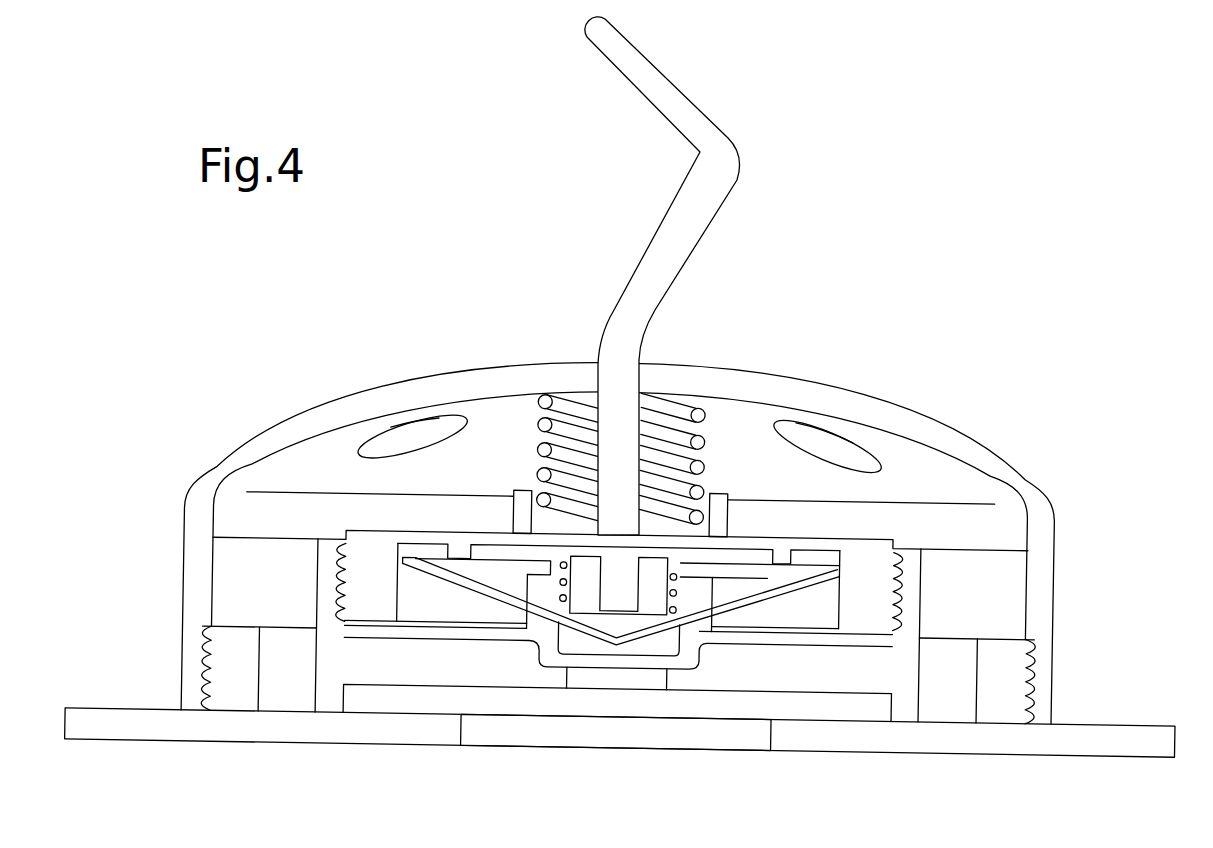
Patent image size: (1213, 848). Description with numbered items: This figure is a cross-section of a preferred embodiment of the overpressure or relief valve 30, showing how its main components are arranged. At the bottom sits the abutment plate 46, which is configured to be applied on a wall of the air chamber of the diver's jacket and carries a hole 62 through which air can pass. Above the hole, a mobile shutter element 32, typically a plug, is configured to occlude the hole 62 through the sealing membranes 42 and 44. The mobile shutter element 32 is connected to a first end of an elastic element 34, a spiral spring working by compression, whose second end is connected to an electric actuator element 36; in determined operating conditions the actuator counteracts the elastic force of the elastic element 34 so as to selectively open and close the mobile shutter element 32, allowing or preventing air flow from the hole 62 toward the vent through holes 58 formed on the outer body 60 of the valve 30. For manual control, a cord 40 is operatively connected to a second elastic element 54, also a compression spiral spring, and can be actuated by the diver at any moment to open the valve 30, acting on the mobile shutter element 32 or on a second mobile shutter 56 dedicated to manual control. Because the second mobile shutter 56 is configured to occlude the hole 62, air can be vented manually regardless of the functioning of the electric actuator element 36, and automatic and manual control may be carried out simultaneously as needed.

The overpressure or relief valve 30 is at (917, 355).
The mobile shutter element 32 is at (583, 571).
The elastic element 34 is at (678, 593).
The electric actuator element 36 is at (485, 548).
The cord 40 is at (721, 123).
The sealing membrane 42 is at (880, 632).
The sealing membrane 44 is at (353, 697).
The abutment plate 46 is at (118, 713).
The second elastic element 54 is at (697, 412).
The second mobile shutter 56 is at (317, 605).
The vent through hole 58 is at (406, 440).
The outer body 60 is at (1035, 493).
The hole 62 is at (520, 728).